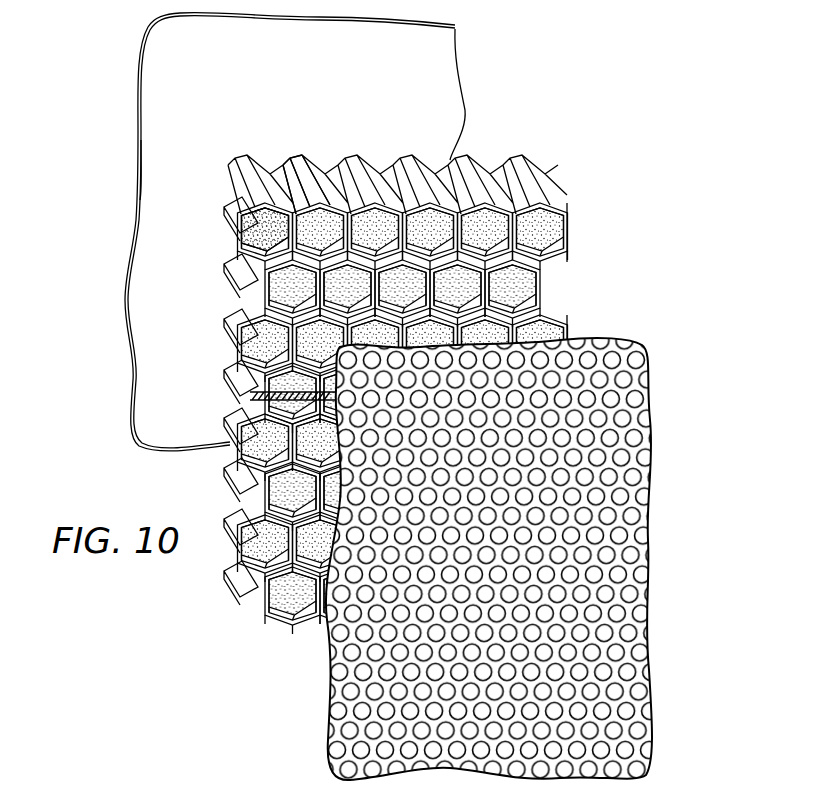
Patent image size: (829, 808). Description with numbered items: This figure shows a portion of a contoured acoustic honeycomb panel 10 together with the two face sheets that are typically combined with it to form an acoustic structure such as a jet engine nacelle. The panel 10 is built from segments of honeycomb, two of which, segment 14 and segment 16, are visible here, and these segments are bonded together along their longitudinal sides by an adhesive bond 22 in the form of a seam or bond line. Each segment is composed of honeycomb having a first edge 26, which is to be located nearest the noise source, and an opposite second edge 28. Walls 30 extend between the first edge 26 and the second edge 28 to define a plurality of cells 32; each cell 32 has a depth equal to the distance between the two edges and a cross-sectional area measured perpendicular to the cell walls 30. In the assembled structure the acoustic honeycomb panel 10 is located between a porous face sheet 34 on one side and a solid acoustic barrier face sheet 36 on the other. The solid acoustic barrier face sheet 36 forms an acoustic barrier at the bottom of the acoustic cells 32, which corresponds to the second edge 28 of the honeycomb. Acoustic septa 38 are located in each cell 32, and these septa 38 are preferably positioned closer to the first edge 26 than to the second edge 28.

The contoured acoustic honeycomb panel 10 is at (600, 130).
The segment of honeycomb 14 is at (560, 267).
The segment of honeycomb 16 is at (265, 607).
The adhesive bond 22 is at (250, 396).
The first edge 26 is at (560, 213).
The second edge 28 is at (478, 170).
The walls 30 is at (303, 170).
The cells 32 is at (212, 197).
The porous face sheet 34 is at (648, 350).
The solid acoustic barrier face sheet 36 is at (456, 28).
The acoustic septa 38 is at (265, 240).